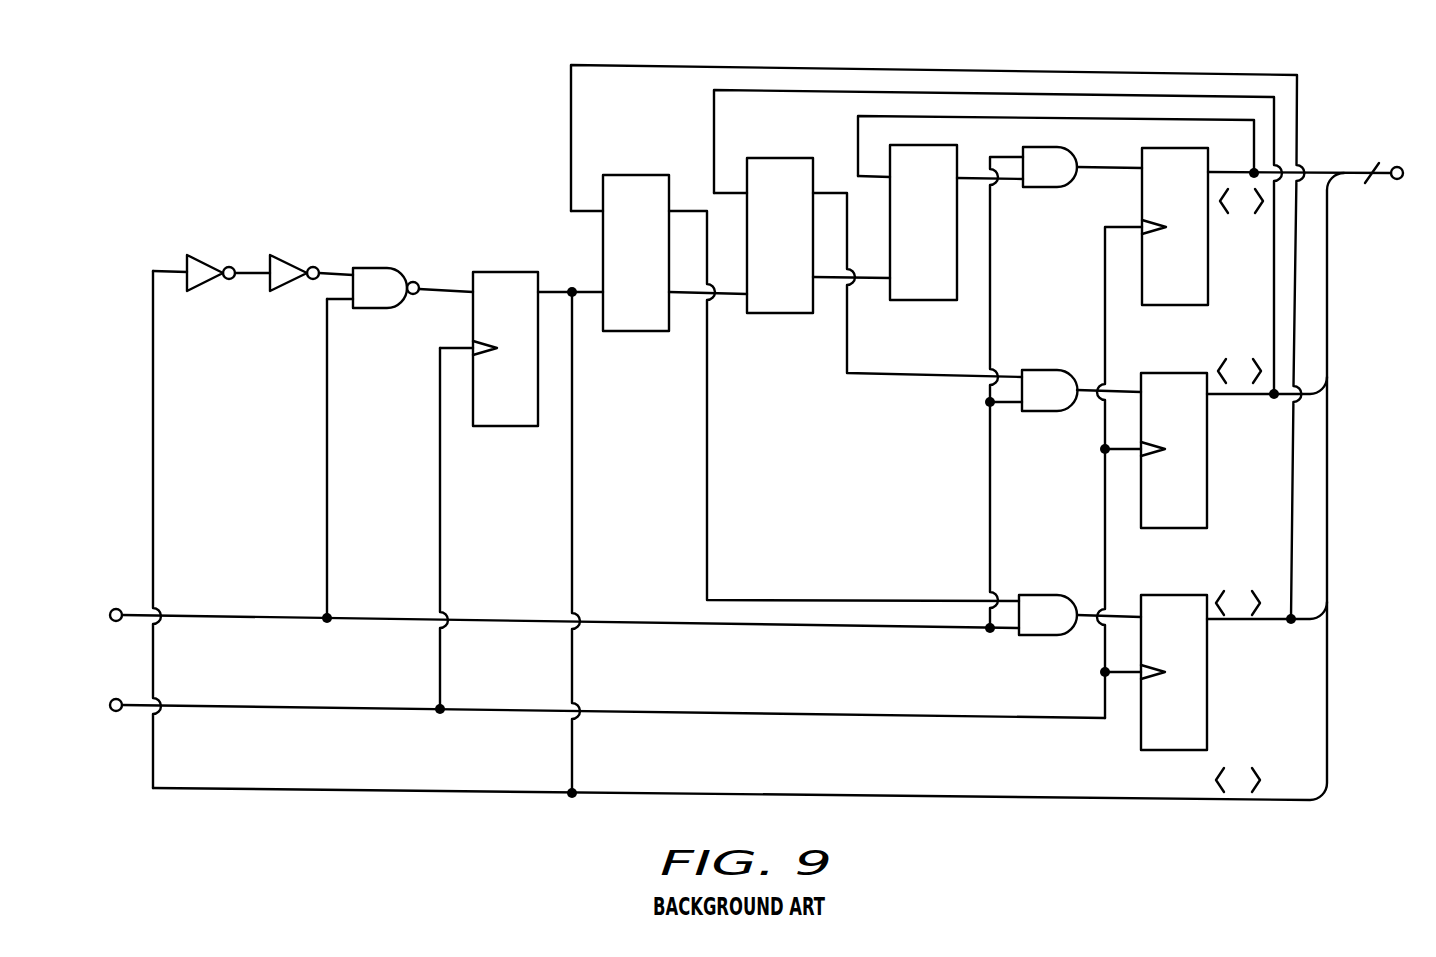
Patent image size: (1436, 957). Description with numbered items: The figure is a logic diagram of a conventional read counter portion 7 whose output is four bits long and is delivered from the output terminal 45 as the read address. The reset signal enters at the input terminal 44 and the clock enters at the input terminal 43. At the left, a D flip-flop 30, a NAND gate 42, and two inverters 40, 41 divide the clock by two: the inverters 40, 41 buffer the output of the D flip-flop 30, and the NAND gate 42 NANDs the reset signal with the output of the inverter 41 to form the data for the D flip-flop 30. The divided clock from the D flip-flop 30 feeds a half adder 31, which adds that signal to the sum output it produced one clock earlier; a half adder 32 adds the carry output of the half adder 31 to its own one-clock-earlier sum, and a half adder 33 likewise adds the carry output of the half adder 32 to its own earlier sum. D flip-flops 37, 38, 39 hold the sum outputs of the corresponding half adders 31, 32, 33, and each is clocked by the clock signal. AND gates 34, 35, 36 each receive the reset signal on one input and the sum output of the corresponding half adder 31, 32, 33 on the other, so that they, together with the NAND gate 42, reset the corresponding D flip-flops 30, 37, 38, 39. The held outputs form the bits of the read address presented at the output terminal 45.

The read counter portion 7 is at (305, 102).
The D flip-flop 30 is at (510, 420).
The half adder 31 is at (641, 323).
The half adder 32 is at (785, 305).
The half adder 33 is at (948, 231).
The AND gate 34 is at (1050, 630).
The AND gate 35 is at (1053, 405).
The AND gate 36 is at (1053, 182).
The D flip-flop 37 is at (1199, 729).
The D flip-flop 38 is at (1199, 508).
The D flip-flop 39 is at (1200, 286).
The inverter 40 is at (204, 268).
The inverter 41 is at (289, 268).
The NAND gate 42 is at (377, 274).
The input terminal 43 is at (121, 711).
The input terminal 44 is at (114, 608).
The output terminal 45 is at (1390, 181).